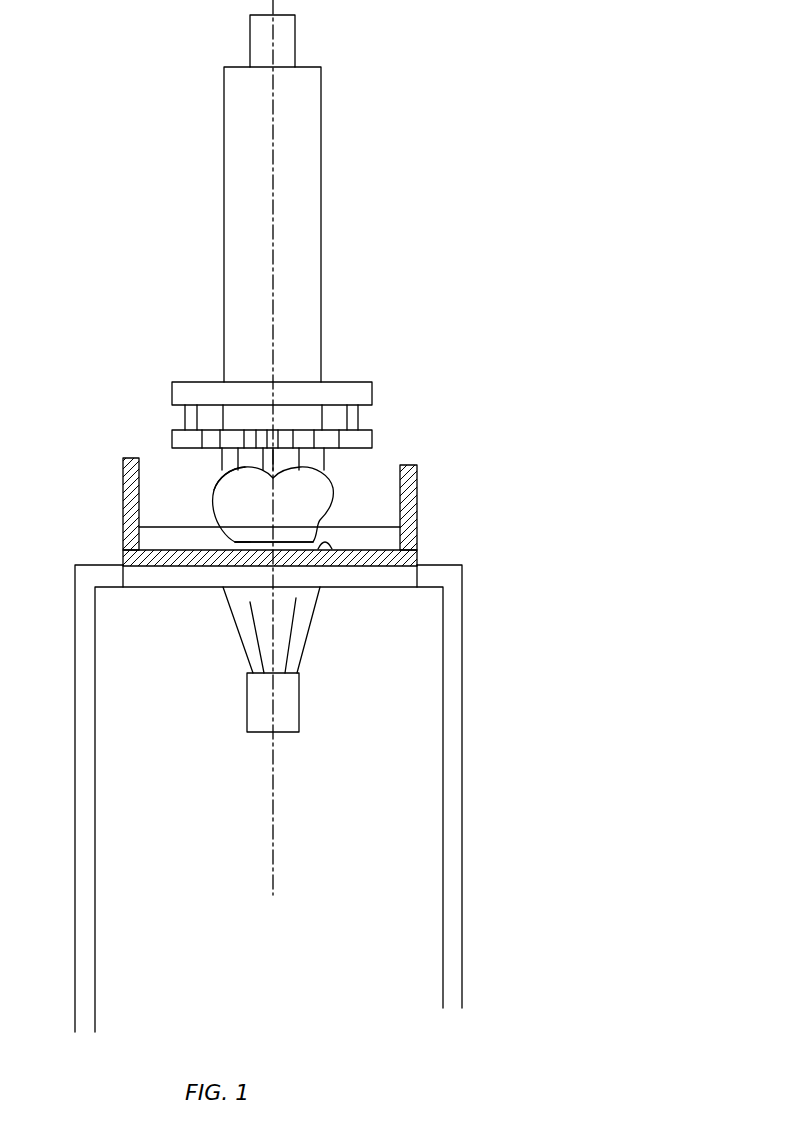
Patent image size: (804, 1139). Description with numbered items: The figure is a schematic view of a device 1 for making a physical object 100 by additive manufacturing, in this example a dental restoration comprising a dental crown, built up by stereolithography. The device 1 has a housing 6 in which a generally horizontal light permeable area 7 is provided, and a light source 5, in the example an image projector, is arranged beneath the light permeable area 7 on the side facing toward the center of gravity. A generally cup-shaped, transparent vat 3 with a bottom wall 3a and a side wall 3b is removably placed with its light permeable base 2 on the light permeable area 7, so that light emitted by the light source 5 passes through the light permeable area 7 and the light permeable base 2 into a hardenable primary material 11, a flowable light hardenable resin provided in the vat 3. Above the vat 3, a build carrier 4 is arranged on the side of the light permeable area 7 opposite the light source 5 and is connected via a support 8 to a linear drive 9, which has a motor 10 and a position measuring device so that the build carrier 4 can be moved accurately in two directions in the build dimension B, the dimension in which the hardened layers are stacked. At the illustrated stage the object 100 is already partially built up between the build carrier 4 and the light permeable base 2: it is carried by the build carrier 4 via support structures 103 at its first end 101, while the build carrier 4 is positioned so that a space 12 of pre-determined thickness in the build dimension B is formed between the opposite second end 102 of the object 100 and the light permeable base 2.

The device 1 is at (503, 97).
The build dimension B is at (273, 90).
The motor 10 is at (283, 25).
The linear drive 9 is at (302, 225).
The support 8 is at (352, 393).
The build carrier 4 is at (273, 426).
The support structures 103 is at (223, 460).
The physical object 100 is at (313, 487).
The first end 101 is at (215, 473).
The second end 102 is at (233, 548).
The space 12 is at (242, 543).
The light permeable base 2 is at (332, 549).
The vat 3 is at (263, 550).
The bottom wall 3a is at (148, 560).
The side wall 3b is at (130, 515).
The hardenable primary material 11 is at (375, 535).
The housing 6 is at (450, 660).
The light permeable area 7 is at (403, 578).
The light source 5 is at (299, 705).